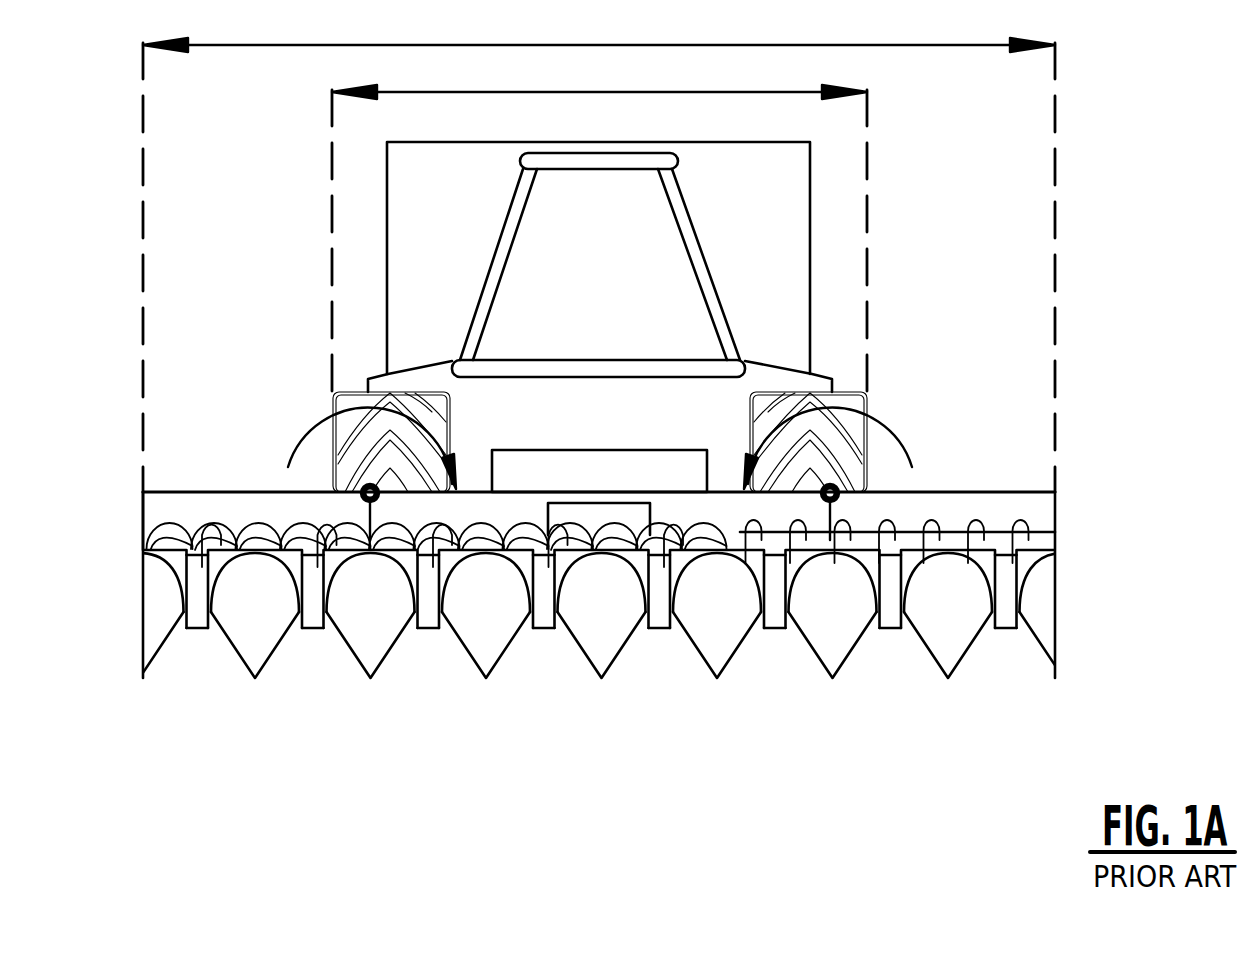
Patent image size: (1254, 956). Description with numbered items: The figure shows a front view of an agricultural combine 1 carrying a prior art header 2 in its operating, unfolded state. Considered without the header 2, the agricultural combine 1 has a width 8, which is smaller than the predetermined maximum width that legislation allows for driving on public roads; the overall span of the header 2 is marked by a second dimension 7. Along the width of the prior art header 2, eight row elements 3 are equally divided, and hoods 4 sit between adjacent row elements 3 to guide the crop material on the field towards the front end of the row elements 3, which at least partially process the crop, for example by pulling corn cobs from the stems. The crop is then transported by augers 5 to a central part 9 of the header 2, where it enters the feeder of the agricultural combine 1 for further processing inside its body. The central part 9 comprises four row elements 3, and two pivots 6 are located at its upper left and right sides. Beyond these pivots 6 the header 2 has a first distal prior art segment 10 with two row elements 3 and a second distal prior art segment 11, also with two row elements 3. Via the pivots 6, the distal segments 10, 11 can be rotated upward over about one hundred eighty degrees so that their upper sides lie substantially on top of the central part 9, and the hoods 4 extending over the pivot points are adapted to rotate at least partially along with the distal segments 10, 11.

The agricultural combine 1 is at (908, 274).
The prior art header 2 is at (1088, 574).
The row elements 3 is at (197, 617).
The hoods 4 is at (152, 632).
The augers 5 is at (978, 537).
The pivots 6 is at (363, 498).
The header working width 7 is at (498, 44).
The width 8 is at (560, 92).
The central part 9 is at (662, 527).
The first distal prior art segment 10 is at (935, 503).
The second distal prior art segment 11 is at (190, 497).